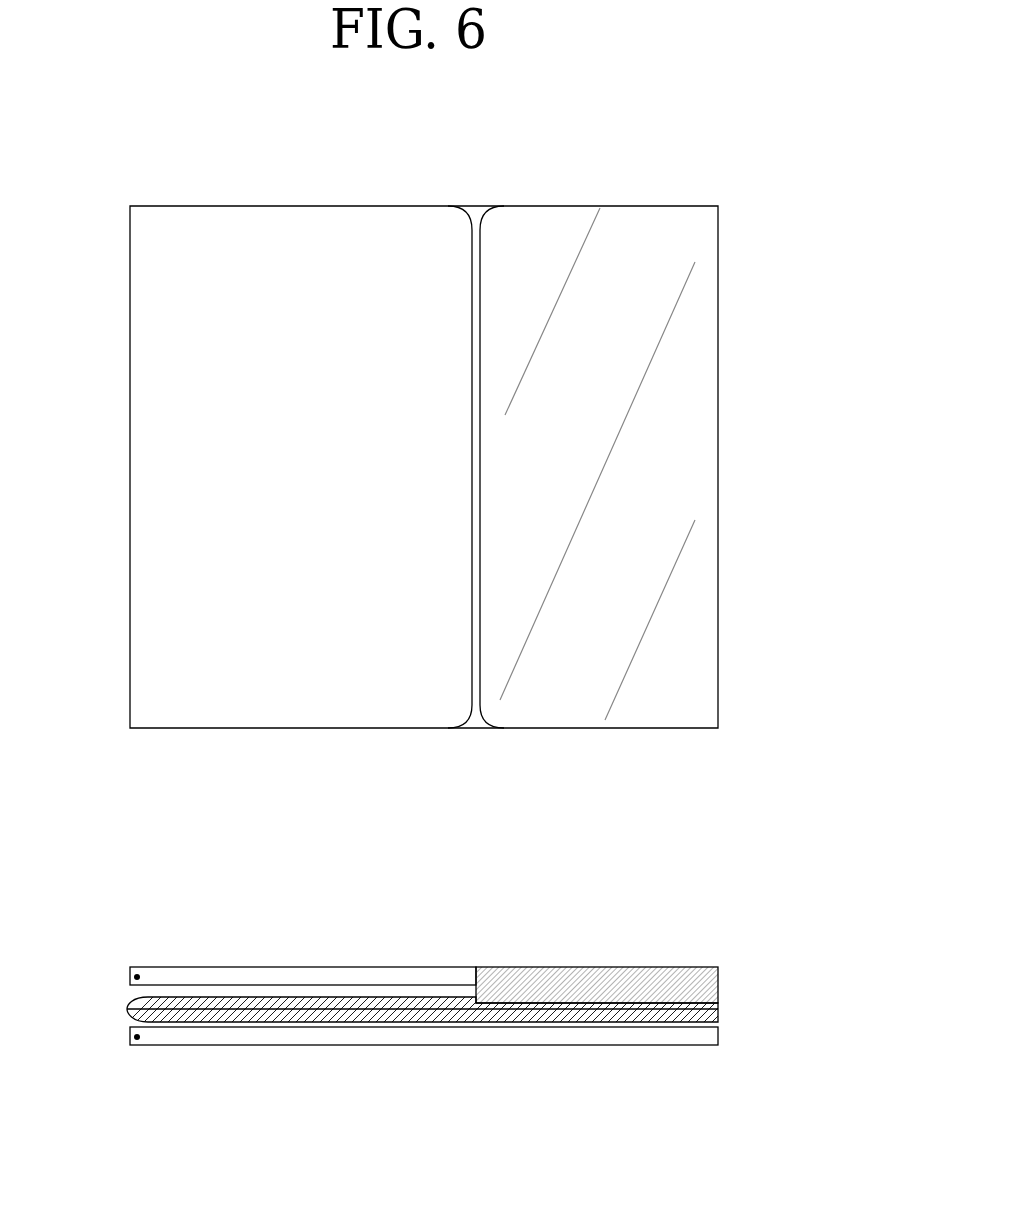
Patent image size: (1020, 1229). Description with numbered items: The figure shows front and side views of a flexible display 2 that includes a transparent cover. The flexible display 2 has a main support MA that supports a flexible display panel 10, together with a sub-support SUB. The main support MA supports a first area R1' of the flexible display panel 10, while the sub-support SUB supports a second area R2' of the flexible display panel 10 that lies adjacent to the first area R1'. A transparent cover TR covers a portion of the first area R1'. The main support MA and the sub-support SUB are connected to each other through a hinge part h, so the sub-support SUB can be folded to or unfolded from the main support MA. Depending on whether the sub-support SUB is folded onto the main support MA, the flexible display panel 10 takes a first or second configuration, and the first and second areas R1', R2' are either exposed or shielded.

The flexible display 2 is at (416, 610).
The flexible display panel 10 is at (476, 728).
The sub-support SUB is at (143, 486).
The transparent cover TR is at (706, 484).
The main support MA is at (426, 1045).
The hinge part h is at (139, 1039).
The first area R1' is at (224, 1064).
The second area R2' is at (280, 955).